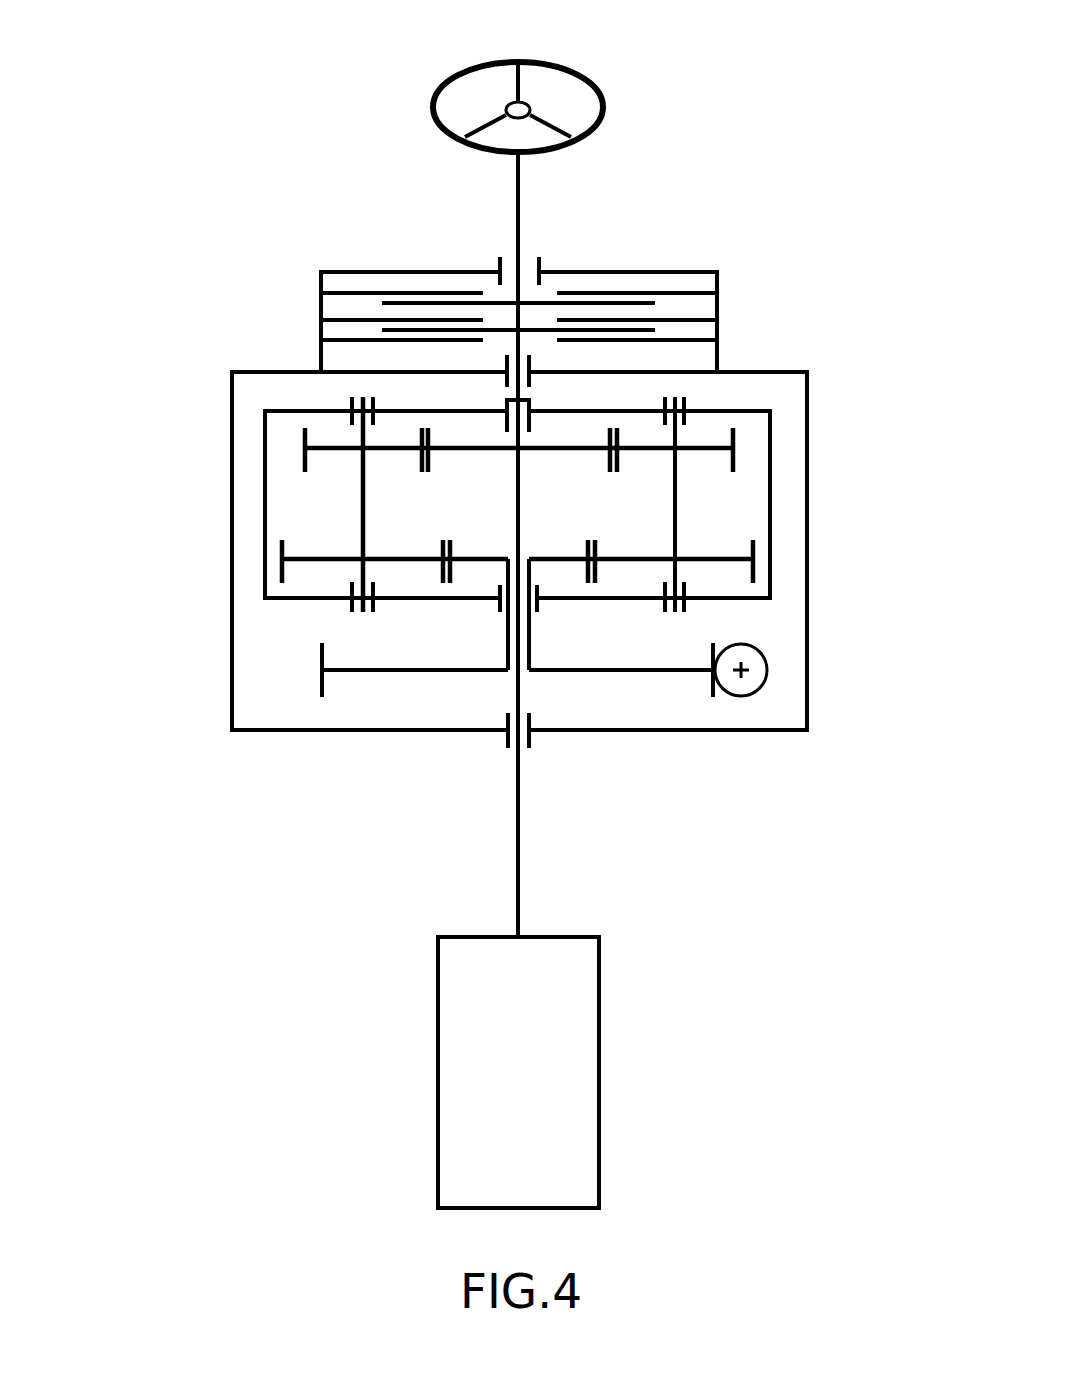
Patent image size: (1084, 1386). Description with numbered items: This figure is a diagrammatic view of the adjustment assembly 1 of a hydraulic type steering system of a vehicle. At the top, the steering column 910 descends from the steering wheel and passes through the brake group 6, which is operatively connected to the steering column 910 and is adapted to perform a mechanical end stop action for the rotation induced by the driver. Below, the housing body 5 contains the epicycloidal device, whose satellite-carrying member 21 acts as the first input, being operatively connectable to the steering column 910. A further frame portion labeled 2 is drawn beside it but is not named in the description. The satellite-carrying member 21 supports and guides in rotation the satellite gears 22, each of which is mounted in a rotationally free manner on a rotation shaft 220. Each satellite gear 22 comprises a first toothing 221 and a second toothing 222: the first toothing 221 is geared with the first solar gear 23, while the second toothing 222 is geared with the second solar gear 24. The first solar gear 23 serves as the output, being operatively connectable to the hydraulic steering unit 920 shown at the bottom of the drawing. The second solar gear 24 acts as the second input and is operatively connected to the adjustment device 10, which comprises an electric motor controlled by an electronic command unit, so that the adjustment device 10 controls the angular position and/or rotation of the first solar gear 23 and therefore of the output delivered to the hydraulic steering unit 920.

The adjustment assembly 1 is at (865, 530).
The transmission gear set 2 is at (778, 423).
The housing body 5 is at (250, 368).
The brake group 6 is at (720, 310).
The adjustment device 10 is at (773, 687).
The satellite-carrying member 21 is at (405, 408).
The satellite gear 22 is at (257, 512).
The rotation shaft 220 is at (348, 512).
The first toothing 221 is at (290, 443).
The second toothing 222 is at (270, 555).
The first solar gear 23 is at (500, 503).
The second solar gear 24 is at (495, 633).
The steering column 910 is at (522, 212).
The hydraulic steering unit 920 is at (627, 1025).